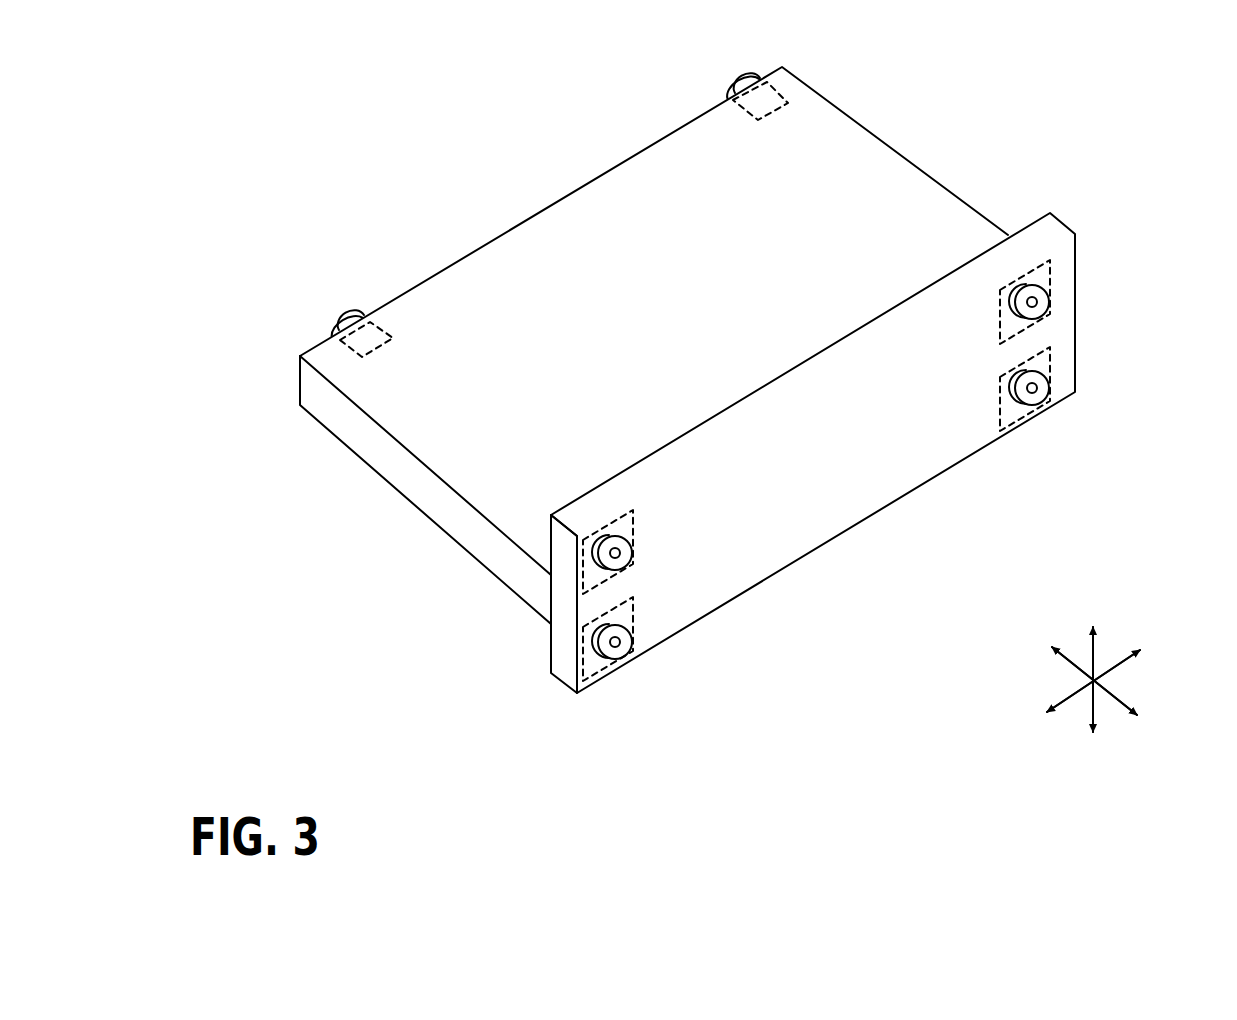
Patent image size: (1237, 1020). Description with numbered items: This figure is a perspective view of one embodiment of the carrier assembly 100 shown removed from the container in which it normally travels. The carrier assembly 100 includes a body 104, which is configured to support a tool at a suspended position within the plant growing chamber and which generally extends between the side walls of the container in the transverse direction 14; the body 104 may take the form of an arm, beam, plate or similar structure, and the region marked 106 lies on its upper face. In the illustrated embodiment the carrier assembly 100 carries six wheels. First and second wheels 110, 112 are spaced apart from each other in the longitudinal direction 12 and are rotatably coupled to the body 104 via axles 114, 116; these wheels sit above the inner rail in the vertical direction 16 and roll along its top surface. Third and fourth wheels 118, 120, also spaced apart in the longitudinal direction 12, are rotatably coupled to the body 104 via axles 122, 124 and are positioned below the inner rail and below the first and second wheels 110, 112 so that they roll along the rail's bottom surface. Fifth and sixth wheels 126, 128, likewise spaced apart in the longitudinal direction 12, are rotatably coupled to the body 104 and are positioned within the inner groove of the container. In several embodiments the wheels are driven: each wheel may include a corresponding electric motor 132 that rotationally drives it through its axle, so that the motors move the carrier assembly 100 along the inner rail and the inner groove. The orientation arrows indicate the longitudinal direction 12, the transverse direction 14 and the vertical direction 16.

The carrier assembly 100 is at (348, 188).
The body 104 is at (483, 238).
The top surface of housing 106 is at (845, 195).
The first wheel 110 is at (597, 560).
The second wheel 112 is at (1022, 283).
The axle 114 is at (615, 557).
The axle 116 is at (1033, 302).
The third wheel 118 is at (602, 653).
The fourth wheel 120 is at (1033, 368).
The axle 122 is at (615, 640).
The axle 124 is at (1033, 390).
The fifth wheel 126 is at (343, 310).
The sixth wheel 128 is at (733, 78).
The electric motor 132 is at (767, 82).
The longitudinal direction 12 is at (1118, 667).
The transverse direction 14 is at (1070, 663).
The vertical direction 16 is at (1093, 653).